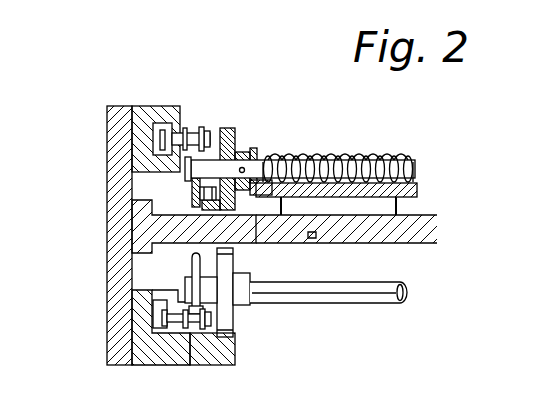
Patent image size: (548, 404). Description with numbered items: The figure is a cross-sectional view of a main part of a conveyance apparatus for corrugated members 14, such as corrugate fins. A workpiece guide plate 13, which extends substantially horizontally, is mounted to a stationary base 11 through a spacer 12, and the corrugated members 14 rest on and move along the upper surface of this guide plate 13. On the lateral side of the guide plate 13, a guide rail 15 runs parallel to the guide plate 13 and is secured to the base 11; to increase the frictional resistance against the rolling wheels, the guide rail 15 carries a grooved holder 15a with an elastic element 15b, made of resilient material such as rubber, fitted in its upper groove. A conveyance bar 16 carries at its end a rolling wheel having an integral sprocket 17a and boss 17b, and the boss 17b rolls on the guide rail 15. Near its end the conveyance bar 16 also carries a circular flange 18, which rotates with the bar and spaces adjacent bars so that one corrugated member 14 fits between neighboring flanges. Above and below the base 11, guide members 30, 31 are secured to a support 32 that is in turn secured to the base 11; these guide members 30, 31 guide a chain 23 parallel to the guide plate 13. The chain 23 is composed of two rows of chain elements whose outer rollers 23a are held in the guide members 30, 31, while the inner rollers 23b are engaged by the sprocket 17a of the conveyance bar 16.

The stationary base 11 is at (361, 230).
The spacer 12 is at (385, 207).
The workpiece guide plate 13 is at (416, 191).
The corrugated members 14 is at (366, 152).
The guide rails 15 is at (200, 216).
The grooved holders 15a is at (210, 217).
The elastic elements 15b is at (312, 238).
The conveyance bar 16 is at (257, 170).
The sprocket 17a is at (185, 192).
The boss 17b is at (236, 140).
The flange 18 is at (241, 150).
The chain 23 is at (190, 126).
The outer rollers 23a is at (163, 122).
The inner rollers 23b is at (202, 127).
The guide member 30 is at (140, 144).
The guide member 31 is at (135, 305).
The support 32 is at (118, 116).